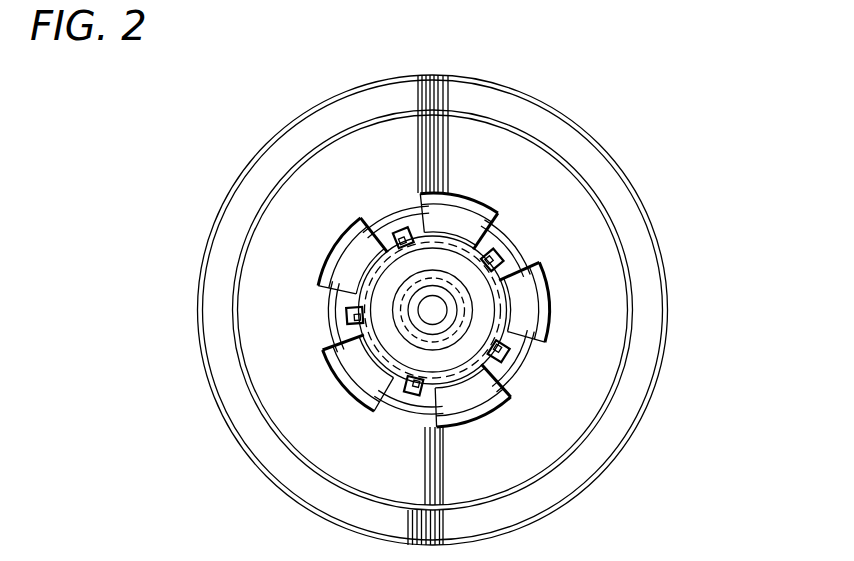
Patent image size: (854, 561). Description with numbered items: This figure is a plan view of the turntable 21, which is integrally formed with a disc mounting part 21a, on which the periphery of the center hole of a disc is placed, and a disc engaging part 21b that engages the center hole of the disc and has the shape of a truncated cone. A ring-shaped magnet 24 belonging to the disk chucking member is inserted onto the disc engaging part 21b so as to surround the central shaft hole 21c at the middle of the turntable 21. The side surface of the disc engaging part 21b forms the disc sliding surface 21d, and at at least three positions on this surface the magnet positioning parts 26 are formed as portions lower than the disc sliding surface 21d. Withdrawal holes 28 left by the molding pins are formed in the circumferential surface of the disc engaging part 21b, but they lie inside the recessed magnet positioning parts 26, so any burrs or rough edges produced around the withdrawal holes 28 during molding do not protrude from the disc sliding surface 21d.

The turntable 21 is at (620, 145).
The disc mounting part 21a is at (633, 230).
The disc engaging part 21b is at (358, 290).
The central shaft hole 21c is at (438, 297).
The disc sliding surface 21d is at (525, 320).
The ring-shaped magnet 24 is at (400, 270).
The magnet positioning parts 26 is at (348, 332).
The withdrawal holes 28 is at (345, 312).